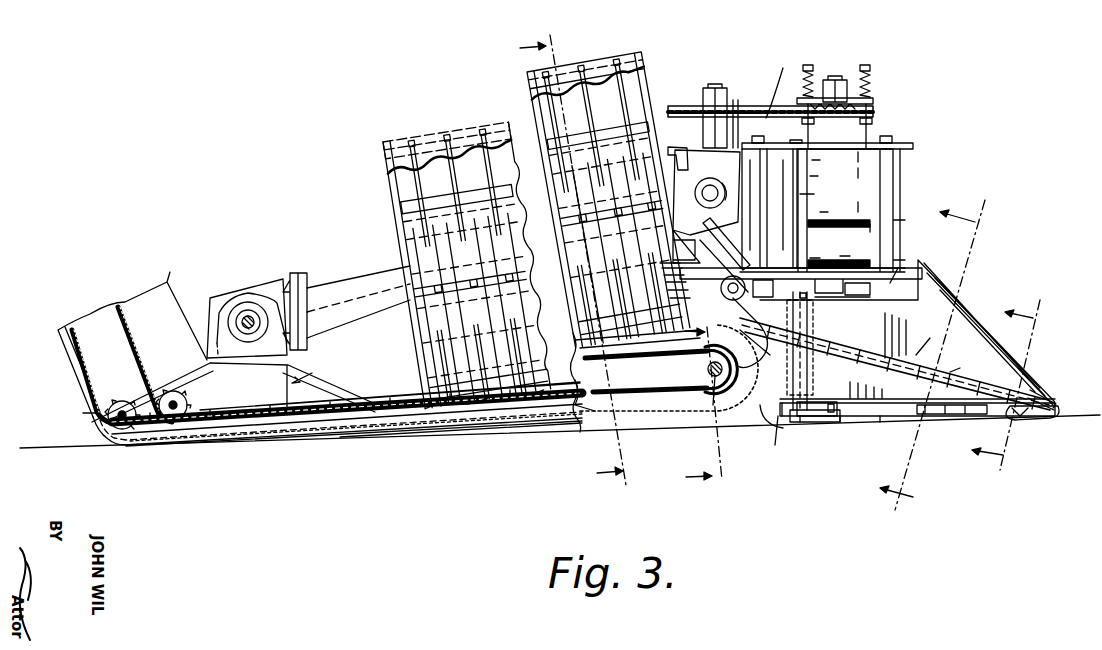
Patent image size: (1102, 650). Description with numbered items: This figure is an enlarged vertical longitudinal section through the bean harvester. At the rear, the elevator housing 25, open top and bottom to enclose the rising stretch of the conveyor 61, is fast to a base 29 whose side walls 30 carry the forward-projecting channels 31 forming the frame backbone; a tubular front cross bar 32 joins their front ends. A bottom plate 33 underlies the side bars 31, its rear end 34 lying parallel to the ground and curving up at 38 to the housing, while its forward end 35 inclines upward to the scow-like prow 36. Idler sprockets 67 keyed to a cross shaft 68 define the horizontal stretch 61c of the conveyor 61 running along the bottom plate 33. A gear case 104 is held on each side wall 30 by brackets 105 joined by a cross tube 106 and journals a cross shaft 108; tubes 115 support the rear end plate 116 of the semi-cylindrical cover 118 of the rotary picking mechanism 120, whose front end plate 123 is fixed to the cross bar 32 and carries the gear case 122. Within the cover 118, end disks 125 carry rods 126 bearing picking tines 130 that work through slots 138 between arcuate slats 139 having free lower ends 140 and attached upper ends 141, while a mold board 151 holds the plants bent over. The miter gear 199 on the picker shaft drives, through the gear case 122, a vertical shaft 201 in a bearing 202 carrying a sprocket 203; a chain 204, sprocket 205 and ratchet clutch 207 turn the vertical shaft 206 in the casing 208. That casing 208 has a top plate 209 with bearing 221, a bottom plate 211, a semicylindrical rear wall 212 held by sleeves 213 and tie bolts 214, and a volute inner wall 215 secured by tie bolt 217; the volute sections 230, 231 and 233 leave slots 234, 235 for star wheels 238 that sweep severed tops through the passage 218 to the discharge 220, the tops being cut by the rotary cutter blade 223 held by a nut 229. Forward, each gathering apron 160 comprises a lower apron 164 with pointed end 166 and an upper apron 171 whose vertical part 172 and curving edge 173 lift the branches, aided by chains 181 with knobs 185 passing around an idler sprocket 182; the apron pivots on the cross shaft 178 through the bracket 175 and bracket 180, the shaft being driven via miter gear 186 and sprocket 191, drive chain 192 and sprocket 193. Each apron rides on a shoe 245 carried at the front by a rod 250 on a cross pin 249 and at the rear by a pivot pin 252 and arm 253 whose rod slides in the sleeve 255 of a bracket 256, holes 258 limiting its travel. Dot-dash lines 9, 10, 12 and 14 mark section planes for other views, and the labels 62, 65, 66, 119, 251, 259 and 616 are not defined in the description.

The elevator housing 25 is at (168, 290).
The conveyor 61 is at (72, 343).
The chain 616 is at (135, 318).
The upturned rear end of bottom plate 38 is at (103, 430).
The sprocket 65 is at (125, 402).
The sprocket 66 is at (186, 393).
The side walls 30 is at (236, 392).
The base 29 is at (313, 370).
The gear case 104 is at (222, 300).
The brackets 105 is at (234, 293).
The cross shaft 108 is at (254, 312).
The cross tube 106 is at (286, 290).
The tubes 115 is at (364, 290).
The conveyor chain 62 is at (360, 436).
The horizontal stretch of conveyor 61c is at (392, 410).
The rear end of bottom plate 34 is at (272, 446).
The bottom plate 33 is at (459, 441).
The channels 31 is at (503, 436).
The semi-cylindrical cover 118 is at (455, 136).
The picking tines 130 is at (392, 174).
The rear end plate 116 is at (392, 184).
The end disks 125 is at (395, 209).
The upper ends of slats 141 is at (408, 232).
The arcuate slats 139 is at (445, 262).
The slots 138 is at (432, 329).
The lower ends of slats 140 is at (426, 364).
The break edge 119 is at (530, 268).
The rotary picking mechanism 120 is at (641, 57).
The front end plate 123 is at (642, 92).
The rods 126 is at (548, 176).
The mold board 151 is at (650, 322).
The section line 12 is at (557, 260).
The section line 14 is at (692, 409).
The forward end of bottom plate 35 is at (664, 416).
The bracket 180 is at (661, 370).
The idler sprockets 67 is at (707, 372).
The cross shaft 68 is at (712, 398).
The supporting bracket 175 is at (745, 338).
The front cross bar 32 is at (706, 206).
The miter gear 199 is at (696, 193).
The sprocket 193 is at (722, 178).
The drive chain 192 is at (745, 240).
The sprocket 191 is at (727, 271).
The cross shaft 178 is at (746, 290).
The miter gear 186 is at (770, 298).
The gear case 122 is at (686, 150).
The vertical shaft 201 is at (716, 84).
The sprocket 203 is at (736, 102).
The bearing 202 is at (770, 103).
The chain 204 is at (783, 79).
The vertical shaft 206 is at (838, 76).
The ratchet clutch 207 is at (882, 67).
The sprocket 205 is at (875, 113).
The top plate 209 is at (913, 146).
The tie bolts 214 is at (758, 131).
The semicylindrical rear wall 212 is at (796, 135).
The tie bolt 217 is at (896, 131).
The vertical sleeves 213 is at (770, 208).
The casing 208 is at (905, 183).
The bearing 221 is at (829, 158).
The inner wall 215 is at (867, 158).
The passage 218 is at (828, 175).
The volute section 230 is at (870, 176).
The discharge 220 is at (823, 192).
The slot 234 is at (835, 209).
The star wheel 238 is at (870, 209).
The volute section 231 is at (839, 230).
The slot 235 is at (872, 232).
The volute section 233 is at (839, 255).
The gathering apron 160 is at (836, 293).
The rotary cutter blade 223 is at (877, 290).
The nut 229 is at (852, 300).
The transverse holes 258 is at (808, 318).
The bracket 256 is at (812, 355).
The vertical sleeve 255 is at (812, 378).
The bottom plate 211 is at (916, 262).
The upper apron 171 is at (958, 312).
The curving edge 173 is at (1006, 352).
The idler sprocket 182 is at (1033, 385).
The lower apron 164 is at (880, 360).
The chains 181 is at (911, 335).
The planar vertical part 172 is at (930, 346).
The knobs 185 is at (958, 360).
The section line 9 is at (937, 361).
The section line 10 is at (1019, 391).
The rod 250 is at (928, 416).
The block 251 is at (958, 414).
The ground-engaging shoe 245 is at (905, 416).
The transverse pivot pin 252 is at (850, 416).
The arm 253 is at (822, 434).
The member 259 is at (784, 416).
The forward end of bottom plate 36 is at (767, 429).
The pointed end 166 is at (1040, 418).
The cross pin 249 is at (1020, 416).